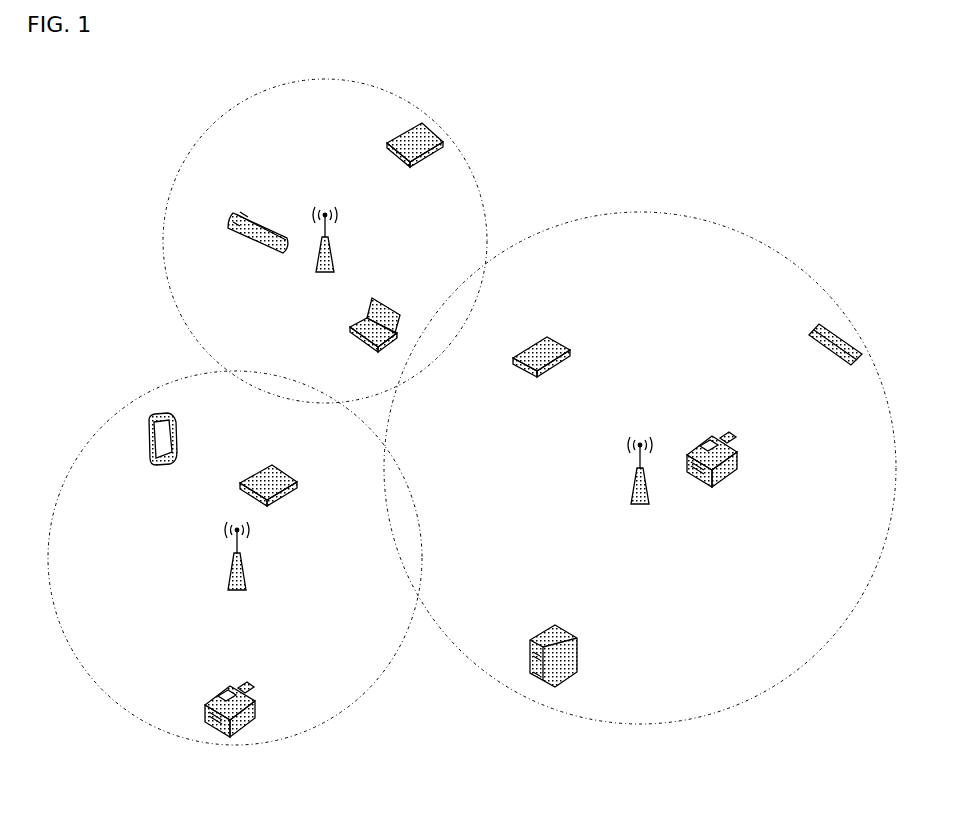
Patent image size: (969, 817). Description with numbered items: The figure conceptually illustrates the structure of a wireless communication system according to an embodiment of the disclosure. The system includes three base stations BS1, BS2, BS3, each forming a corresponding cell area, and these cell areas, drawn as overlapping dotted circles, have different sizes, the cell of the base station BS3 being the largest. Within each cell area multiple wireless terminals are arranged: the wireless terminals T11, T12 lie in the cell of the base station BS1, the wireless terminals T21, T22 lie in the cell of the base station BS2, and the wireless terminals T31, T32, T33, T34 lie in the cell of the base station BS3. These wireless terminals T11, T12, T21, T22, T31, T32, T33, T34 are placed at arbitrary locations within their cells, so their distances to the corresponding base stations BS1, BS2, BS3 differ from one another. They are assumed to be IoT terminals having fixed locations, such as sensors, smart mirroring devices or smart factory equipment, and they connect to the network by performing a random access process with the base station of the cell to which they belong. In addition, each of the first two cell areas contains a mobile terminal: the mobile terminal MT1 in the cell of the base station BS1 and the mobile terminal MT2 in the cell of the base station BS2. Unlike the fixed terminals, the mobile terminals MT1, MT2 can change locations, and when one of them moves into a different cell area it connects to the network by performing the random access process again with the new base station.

The wireless terminal T11 is at (258, 241).
The wireless terminal T12 is at (415, 156).
The base station BS1 is at (325, 249).
The mobile terminal MT1 is at (375, 334).
The mobile terminal MT2 is at (161, 450).
The wireless terminal T21 is at (268, 495).
The base station BS2 is at (237, 566).
The wireless terminal T22 is at (245, 709).
The wireless terminal T31 is at (541, 369).
The wireless terminal T32 is at (712, 472).
The wireless terminal T33 is at (569, 656).
The wireless terminal T34 is at (835, 356).
The base station BS3 is at (639, 482).